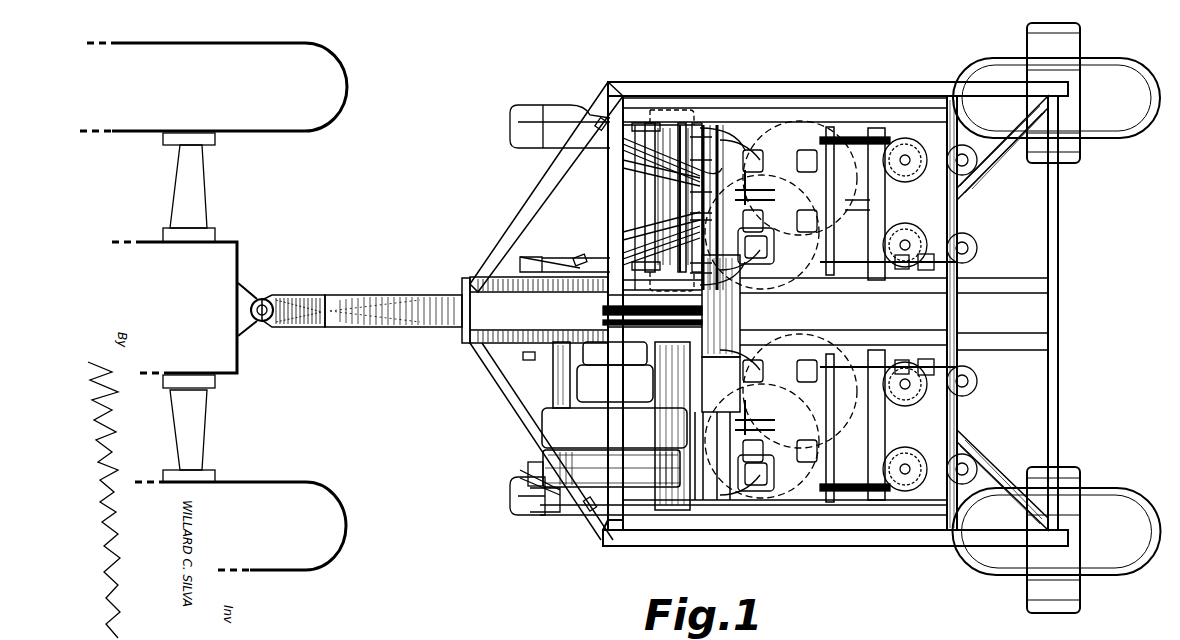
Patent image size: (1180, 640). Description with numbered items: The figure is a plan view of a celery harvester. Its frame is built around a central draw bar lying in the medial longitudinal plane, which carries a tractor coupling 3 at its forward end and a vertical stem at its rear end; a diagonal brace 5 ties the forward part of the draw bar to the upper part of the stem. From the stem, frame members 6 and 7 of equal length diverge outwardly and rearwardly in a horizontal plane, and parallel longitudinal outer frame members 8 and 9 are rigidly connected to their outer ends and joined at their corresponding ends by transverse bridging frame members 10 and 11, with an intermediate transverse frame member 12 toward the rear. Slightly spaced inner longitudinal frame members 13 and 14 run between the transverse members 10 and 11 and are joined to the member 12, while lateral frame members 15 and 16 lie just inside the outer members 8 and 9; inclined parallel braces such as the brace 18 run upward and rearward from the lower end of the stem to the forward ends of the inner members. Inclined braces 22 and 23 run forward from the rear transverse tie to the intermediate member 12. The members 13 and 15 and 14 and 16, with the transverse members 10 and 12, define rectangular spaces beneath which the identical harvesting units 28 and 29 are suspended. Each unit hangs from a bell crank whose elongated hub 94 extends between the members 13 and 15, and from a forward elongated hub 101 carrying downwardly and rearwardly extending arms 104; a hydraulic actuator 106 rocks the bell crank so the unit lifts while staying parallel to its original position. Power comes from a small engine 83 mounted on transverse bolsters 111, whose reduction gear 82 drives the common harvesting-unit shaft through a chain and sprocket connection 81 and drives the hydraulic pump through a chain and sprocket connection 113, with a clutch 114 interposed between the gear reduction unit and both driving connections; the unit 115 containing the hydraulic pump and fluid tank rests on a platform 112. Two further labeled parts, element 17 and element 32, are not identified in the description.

The tractor coupling 3 is at (298, 300).
The diagonal brace 5 is at (400, 295).
The frame member 6 is at (520, 213).
The frame member 7 is at (488, 355).
The outer frame member 8 is at (765, 95).
The outer frame member 9 is at (800, 540).
The bridging frame member 10 is at (612, 202).
The bridging frame member 11 is at (1053, 248).
The intermediate transverse frame member 12 is at (955, 311).
The inner longitudinal frame member 13 is at (992, 285).
The inner longitudinal frame member 14 is at (998, 333).
The lateral frame member 15 is at (815, 112).
The lateral frame member 16 is at (895, 513).
The tongue brace 17 is at (496, 290).
The inclined brace 18 is at (490, 333).
The inclined brace 22 is at (1000, 165).
The inclined brace 23 is at (978, 475).
The harvesting unit 28 is at (862, 204).
The harvesting unit 29 is at (850, 422).
The bracket clamp 32 is at (598, 122).
The chain and sprocket connection 81 is at (650, 305).
The reduction gear 82 is at (615, 383).
The small engine 83 is at (607, 447).
The elongated hub 94 is at (825, 189).
The elongated hub 101 is at (630, 180).
The downwardly and rearwardly extending arms 104 is at (660, 122).
The hydraulic actuator 106 is at (914, 255).
The transverse bolsters 111 is at (565, 380).
The platform 112 is at (742, 301).
The chain and sprocket connection 113 is at (655, 326).
The clutch 114 is at (615, 353).
The hydraulic pump and tank unit 115 is at (721, 384).